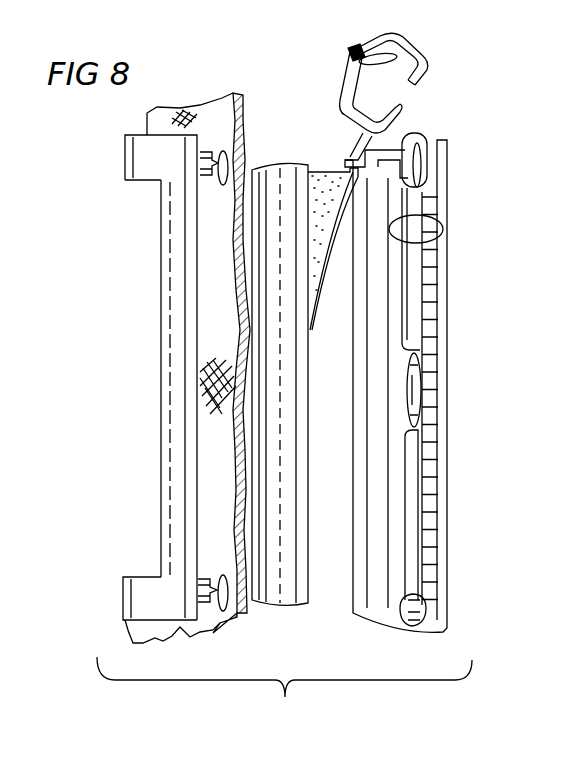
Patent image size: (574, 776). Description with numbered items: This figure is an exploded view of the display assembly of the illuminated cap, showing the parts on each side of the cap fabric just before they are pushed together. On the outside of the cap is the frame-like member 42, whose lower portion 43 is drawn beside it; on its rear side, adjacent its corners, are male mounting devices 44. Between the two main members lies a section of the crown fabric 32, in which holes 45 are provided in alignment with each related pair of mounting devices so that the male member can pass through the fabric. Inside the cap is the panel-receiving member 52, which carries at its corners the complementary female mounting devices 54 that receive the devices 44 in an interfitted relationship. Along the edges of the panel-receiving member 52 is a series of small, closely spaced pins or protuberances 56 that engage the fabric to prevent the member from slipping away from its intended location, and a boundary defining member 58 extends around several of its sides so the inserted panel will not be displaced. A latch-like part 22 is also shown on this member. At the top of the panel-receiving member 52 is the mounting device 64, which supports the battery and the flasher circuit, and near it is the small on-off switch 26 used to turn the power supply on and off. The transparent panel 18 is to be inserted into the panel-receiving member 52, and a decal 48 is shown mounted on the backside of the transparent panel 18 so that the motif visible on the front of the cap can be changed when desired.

The transparent panel 18 is at (277, 605).
The latch member 22 is at (418, 397).
The on-off switch 26 is at (413, 50).
The fabric of the cap 32 is at (237, 103).
The frame-like member 42 is at (125, 162).
The frame flange 43 is at (143, 577).
The mounting devices 44 is at (213, 150).
The holes 45 is at (228, 163).
The decal 48 is at (327, 180).
The panel-receiving member 52 is at (443, 497).
The mounting devices 54 is at (433, 137).
The pins or protuberances 56 is at (428, 312).
The boundary defining member 58 is at (443, 236).
The mounting device 64 is at (427, 52).